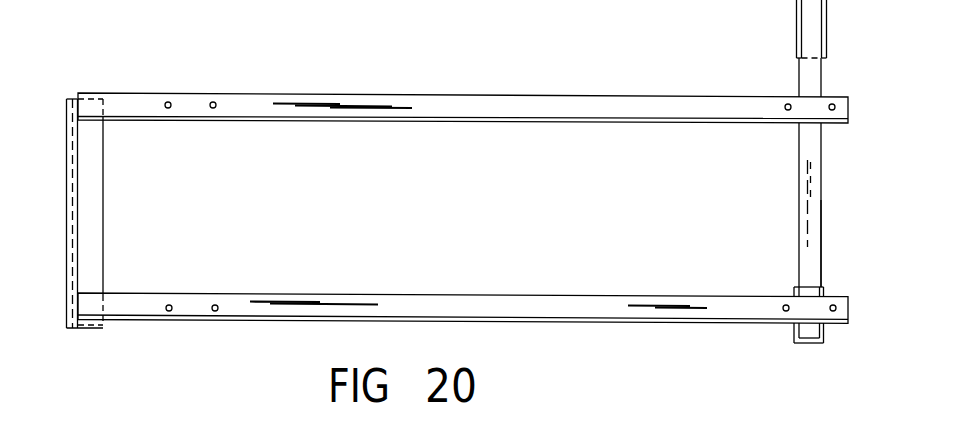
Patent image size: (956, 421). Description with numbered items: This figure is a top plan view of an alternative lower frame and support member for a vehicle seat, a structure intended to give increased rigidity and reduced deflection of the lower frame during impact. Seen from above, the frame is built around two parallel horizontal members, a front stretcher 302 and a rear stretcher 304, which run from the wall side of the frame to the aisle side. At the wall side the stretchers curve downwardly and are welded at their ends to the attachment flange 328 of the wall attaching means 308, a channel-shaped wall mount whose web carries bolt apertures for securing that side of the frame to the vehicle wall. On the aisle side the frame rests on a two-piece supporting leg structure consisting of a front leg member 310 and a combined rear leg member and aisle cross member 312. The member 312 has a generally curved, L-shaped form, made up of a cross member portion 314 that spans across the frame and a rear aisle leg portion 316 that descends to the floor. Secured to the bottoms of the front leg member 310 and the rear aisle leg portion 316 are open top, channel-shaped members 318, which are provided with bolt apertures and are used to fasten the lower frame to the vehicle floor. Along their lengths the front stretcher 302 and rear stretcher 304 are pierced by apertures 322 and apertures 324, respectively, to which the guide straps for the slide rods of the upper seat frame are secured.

The front stretcher 302 is at (615, 313).
The rear stretcher 304 is at (507, 100).
The wall attaching means 308 is at (63, 237).
The front leg member 310 is at (809, 339).
The combined rear leg member and aisle cross member 312 is at (779, 208).
The cross member portion 314 is at (815, 223).
The rear aisle leg portion 316 is at (815, 80).
The channel-shaped members 318 is at (797, 18).
The apertures 322 is at (215, 305).
The apertures 324 is at (213, 108).
The attachment flange 328 is at (92, 235).